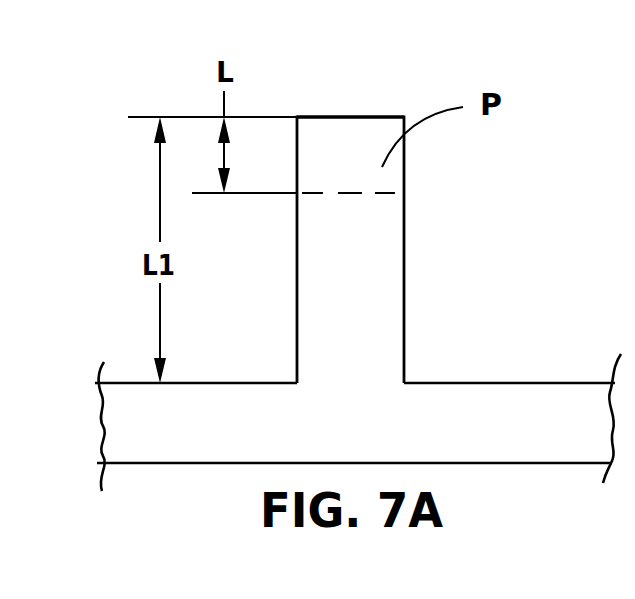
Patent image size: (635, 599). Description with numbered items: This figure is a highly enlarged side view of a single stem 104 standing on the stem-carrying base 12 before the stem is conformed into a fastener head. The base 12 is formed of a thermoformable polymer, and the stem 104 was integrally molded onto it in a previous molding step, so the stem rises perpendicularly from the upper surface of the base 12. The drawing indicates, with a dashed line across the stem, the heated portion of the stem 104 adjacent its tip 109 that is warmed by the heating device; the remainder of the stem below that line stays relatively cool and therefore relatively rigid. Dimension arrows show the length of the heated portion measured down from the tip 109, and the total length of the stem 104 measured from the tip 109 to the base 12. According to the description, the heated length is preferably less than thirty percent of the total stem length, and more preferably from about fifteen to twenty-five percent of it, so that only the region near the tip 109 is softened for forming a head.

The stem-carrying base 12 is at (517, 403).
The stem 104 is at (385, 270).
The tip 109 is at (354, 117).